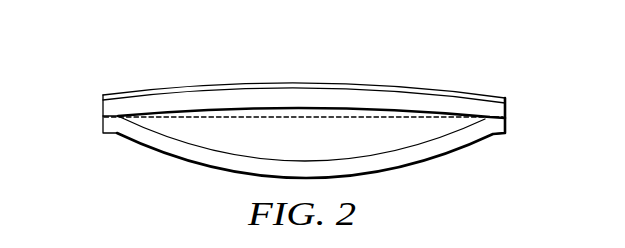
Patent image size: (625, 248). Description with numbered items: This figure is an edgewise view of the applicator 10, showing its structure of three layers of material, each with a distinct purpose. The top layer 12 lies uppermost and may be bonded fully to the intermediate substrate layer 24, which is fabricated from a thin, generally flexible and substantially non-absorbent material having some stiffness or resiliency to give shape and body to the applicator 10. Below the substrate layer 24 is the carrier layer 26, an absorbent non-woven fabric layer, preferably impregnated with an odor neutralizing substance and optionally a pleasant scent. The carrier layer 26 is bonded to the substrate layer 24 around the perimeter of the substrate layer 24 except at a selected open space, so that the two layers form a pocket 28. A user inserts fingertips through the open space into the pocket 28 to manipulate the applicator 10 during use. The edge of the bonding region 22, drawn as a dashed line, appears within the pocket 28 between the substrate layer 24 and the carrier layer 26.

The applicator 10 is at (347, 69).
The top layer 12 is at (458, 91).
The edge of the bonding region 22 is at (221, 116).
The substrate layer 24 is at (103, 98).
The carrier layer 26 is at (455, 150).
The pocket 28 is at (377, 134).